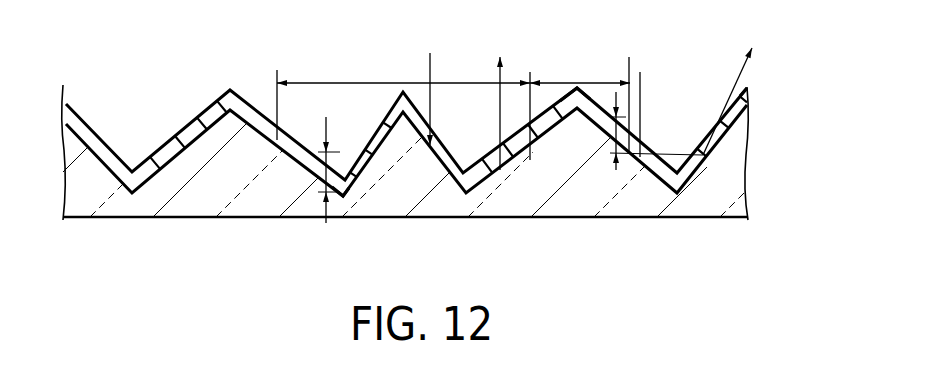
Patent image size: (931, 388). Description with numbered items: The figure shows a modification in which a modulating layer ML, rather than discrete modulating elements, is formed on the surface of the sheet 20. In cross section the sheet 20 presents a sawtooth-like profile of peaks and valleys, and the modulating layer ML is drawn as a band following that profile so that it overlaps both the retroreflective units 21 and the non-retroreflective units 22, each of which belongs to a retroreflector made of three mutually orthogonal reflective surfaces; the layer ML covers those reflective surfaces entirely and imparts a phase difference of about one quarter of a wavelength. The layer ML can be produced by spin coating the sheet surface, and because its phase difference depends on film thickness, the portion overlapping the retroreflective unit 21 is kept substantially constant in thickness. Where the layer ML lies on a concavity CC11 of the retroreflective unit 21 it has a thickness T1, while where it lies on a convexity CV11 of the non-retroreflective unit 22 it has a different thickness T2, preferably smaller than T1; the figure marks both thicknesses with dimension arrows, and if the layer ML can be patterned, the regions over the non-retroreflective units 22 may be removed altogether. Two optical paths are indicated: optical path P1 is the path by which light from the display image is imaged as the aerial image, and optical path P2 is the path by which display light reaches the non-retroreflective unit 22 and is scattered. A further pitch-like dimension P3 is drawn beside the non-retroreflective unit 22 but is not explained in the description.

The retroreflective sheet 20 is at (757, 73).
The retroreflective unit 21 is at (360, 83).
The non-retroreflective unit 22 is at (593, 83).
The modulating layer ML is at (727, 128).
The convexity CV11 is at (577, 88).
The concavity CC11 is at (340, 200).
The optical path P1 is at (466, 100).
The optical path P2 is at (736, 86).
The third pitch P3 is at (634, 94).
The thickness T1 is at (330, 175).
The thickness T2 is at (622, 126).